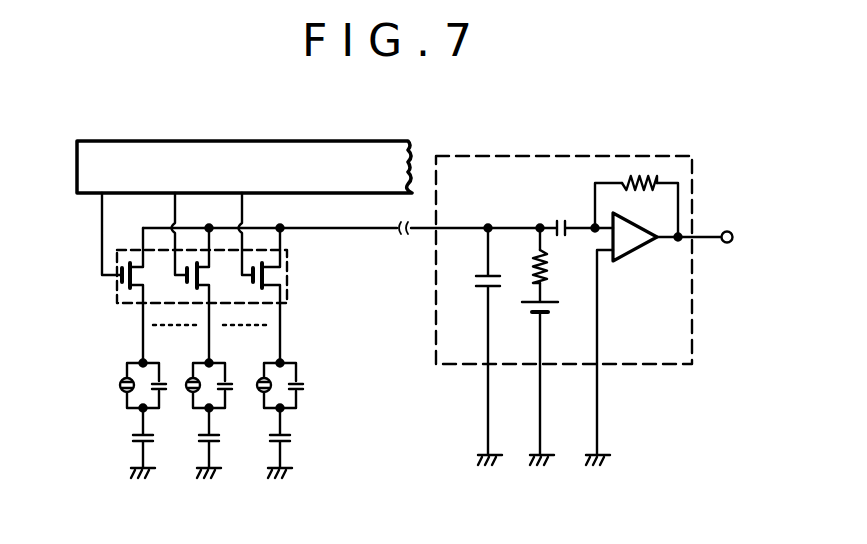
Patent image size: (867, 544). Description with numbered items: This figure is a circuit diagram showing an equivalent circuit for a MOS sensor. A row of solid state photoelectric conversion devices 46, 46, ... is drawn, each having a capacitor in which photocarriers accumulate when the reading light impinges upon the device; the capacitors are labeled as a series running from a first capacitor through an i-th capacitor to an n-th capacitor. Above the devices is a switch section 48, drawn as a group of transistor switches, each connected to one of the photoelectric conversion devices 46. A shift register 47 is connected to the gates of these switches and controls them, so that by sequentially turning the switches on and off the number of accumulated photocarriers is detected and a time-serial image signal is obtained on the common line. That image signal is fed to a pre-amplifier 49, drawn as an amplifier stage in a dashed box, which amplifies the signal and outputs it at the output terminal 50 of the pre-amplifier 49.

The solid state photoelectric conversion device 46 is at (122, 412).
The shift register 47 is at (87, 195).
The switch section 48 is at (112, 292).
The pre-amplifier 49 is at (643, 364).
The output terminal 50 is at (733, 236).